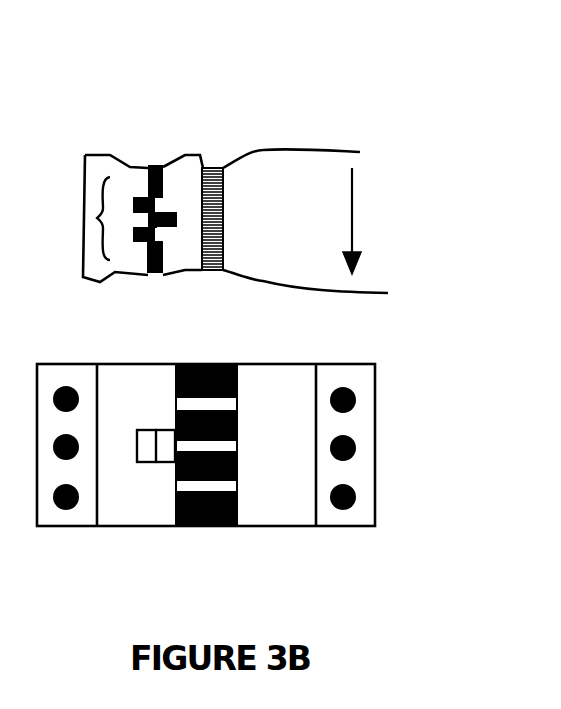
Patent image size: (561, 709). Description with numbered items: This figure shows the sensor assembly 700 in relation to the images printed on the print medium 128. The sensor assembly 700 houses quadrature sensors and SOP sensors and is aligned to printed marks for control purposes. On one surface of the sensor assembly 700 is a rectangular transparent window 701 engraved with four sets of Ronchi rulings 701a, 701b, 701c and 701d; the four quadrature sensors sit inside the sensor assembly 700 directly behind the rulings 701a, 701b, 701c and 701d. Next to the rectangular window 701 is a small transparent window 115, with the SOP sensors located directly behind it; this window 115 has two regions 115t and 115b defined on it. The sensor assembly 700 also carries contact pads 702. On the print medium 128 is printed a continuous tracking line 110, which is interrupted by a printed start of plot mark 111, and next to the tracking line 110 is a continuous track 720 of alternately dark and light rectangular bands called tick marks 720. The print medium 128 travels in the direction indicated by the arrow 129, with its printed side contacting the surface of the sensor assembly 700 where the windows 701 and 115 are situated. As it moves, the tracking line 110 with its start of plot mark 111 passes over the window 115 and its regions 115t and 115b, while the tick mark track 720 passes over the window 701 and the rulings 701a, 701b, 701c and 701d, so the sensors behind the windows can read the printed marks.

The tracking line 110 is at (153, 165).
The start of plot mark 111 is at (96, 214).
The tick marks 720 is at (215, 168).
The print medium 128 is at (392, 221).
The arrow 129 is at (353, 190).
The sensor assembly 700 is at (127, 527).
The rectangular transparent window 701 is at (306, 446).
The ruling 701a is at (237, 375).
The ruling 701b is at (237, 417).
The ruling 701c is at (220, 482).
The ruling 701d is at (220, 523).
The contact pads 702 is at (356, 402).
The transparent window 115 is at (138, 416).
The region of window 115 115t is at (142, 430).
The region of window 115 115b is at (163, 462).